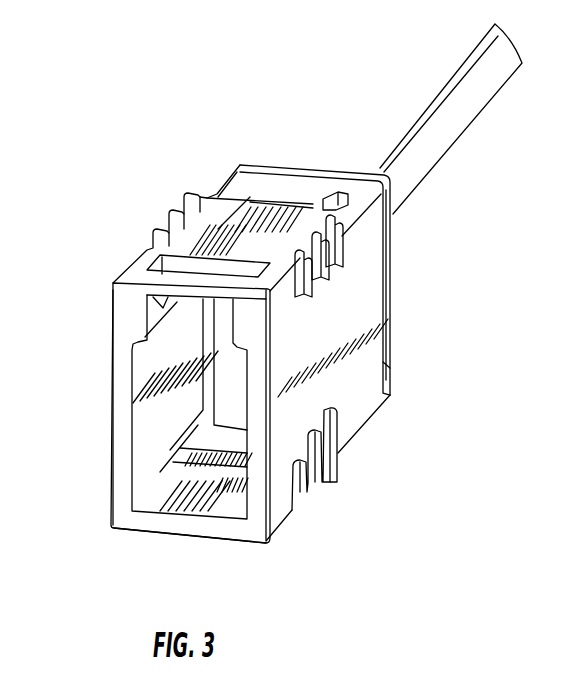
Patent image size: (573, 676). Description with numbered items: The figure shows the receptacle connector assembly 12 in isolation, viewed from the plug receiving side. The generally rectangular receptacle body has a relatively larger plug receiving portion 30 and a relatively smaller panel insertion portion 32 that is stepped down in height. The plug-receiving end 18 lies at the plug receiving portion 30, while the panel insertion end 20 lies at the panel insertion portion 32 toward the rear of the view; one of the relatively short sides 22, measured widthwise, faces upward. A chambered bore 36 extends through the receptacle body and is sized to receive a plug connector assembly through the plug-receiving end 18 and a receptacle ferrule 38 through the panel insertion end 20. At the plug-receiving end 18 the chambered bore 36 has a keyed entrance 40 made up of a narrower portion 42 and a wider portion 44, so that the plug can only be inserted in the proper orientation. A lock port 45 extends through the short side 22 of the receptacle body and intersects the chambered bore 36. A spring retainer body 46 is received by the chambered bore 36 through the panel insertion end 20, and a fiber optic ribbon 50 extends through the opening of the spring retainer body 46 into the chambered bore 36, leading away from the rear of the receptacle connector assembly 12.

The receptacle connector assembly 12 is at (123, 185).
The plug receiving portion 30 is at (100, 273).
The panel insertion portion 32 is at (257, 145).
The lock port 45 is at (218, 268).
The short side 22 is at (297, 210).
The fiber optic ribbon 50 is at (447, 133).
The spring retainer body 46 is at (397, 310).
The panel insertion end 20 is at (390, 368).
The narrower portion 42 is at (131, 299).
The receptacle ferrule 38 is at (230, 366).
The plug-receiving end 18 is at (117, 427).
The wider portion 44 is at (128, 477).
The chambered bore 36 is at (161, 507).
The keyed entrance 40 is at (247, 493).